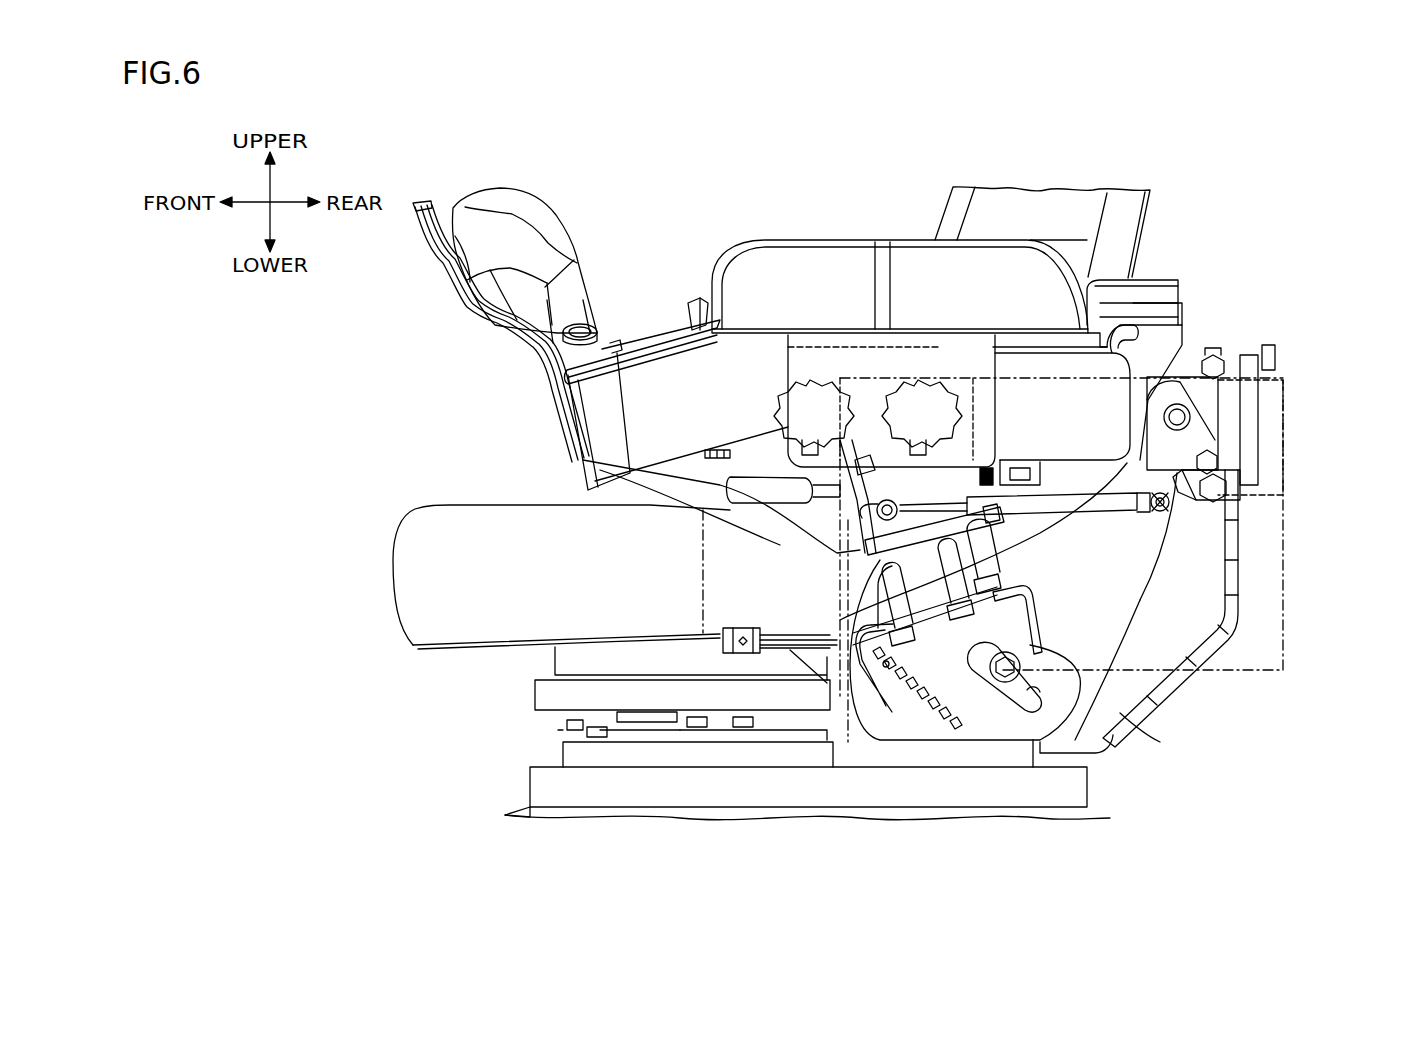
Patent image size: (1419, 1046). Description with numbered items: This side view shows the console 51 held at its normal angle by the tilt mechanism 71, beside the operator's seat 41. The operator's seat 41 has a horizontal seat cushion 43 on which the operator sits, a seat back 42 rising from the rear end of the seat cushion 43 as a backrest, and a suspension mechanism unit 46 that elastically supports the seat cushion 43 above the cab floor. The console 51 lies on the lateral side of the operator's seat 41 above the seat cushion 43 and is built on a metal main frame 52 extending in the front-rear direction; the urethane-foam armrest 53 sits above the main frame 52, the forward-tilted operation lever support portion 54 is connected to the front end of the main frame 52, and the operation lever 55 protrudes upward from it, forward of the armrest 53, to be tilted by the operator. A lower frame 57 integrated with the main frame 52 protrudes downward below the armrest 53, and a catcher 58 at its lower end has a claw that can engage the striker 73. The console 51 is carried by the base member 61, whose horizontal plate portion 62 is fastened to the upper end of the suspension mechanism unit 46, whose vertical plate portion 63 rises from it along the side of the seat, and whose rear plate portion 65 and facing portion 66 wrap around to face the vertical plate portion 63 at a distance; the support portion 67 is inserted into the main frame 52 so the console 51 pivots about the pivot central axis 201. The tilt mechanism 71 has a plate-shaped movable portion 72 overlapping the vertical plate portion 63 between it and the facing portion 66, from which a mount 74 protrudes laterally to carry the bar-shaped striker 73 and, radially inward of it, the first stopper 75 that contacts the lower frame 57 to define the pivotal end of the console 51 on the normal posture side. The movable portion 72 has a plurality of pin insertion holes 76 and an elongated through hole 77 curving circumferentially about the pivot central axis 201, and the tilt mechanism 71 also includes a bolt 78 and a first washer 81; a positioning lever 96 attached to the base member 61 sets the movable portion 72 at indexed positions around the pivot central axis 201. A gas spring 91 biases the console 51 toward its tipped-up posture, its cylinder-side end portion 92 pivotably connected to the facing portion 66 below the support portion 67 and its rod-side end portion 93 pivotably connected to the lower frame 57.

The operator's seat 41 is at (1150, 222).
The seat back 42 is at (1013, 215).
The seat cushion 43 is at (428, 575).
The suspension mechanism unit 46 is at (1110, 806).
The console 51 is at (1180, 286).
The main frame 52 is at (1165, 340).
The armrest 53 is at (826, 270).
The operation lever support portion 54 is at (582, 430).
The operation lever 55 is at (523, 210).
The lower frame 57 is at (931, 485).
The catcher 58 is at (707, 510).
The base member 61 is at (1150, 716).
The horizontal plate portion 62 is at (770, 740).
The vertical plate portion 63 is at (1160, 640).
The rear plate portion 65 is at (1206, 488).
The facing portion 66 is at (1208, 462).
The support portion 67 is at (1212, 445).
The tilt mechanism 71 is at (1055, 742).
The movable portion 72 is at (1080, 678).
The striker 73 is at (850, 660).
The mount 74 is at (1035, 605).
The first stopper 75 is at (1020, 540).
The pin insertion holes 76 is at (920, 730).
The through hole 77 is at (1040, 700).
The bolt 78 is at (1002, 670).
The first washer 81 is at (1100, 668).
The gas spring 91 is at (1000, 520).
The cylinder-side end portion 92 is at (1142, 512).
The rod-side end portion 93 is at (730, 498).
The positioning lever 96 is at (730, 655).
The pivot central axis 201 is at (1182, 412).